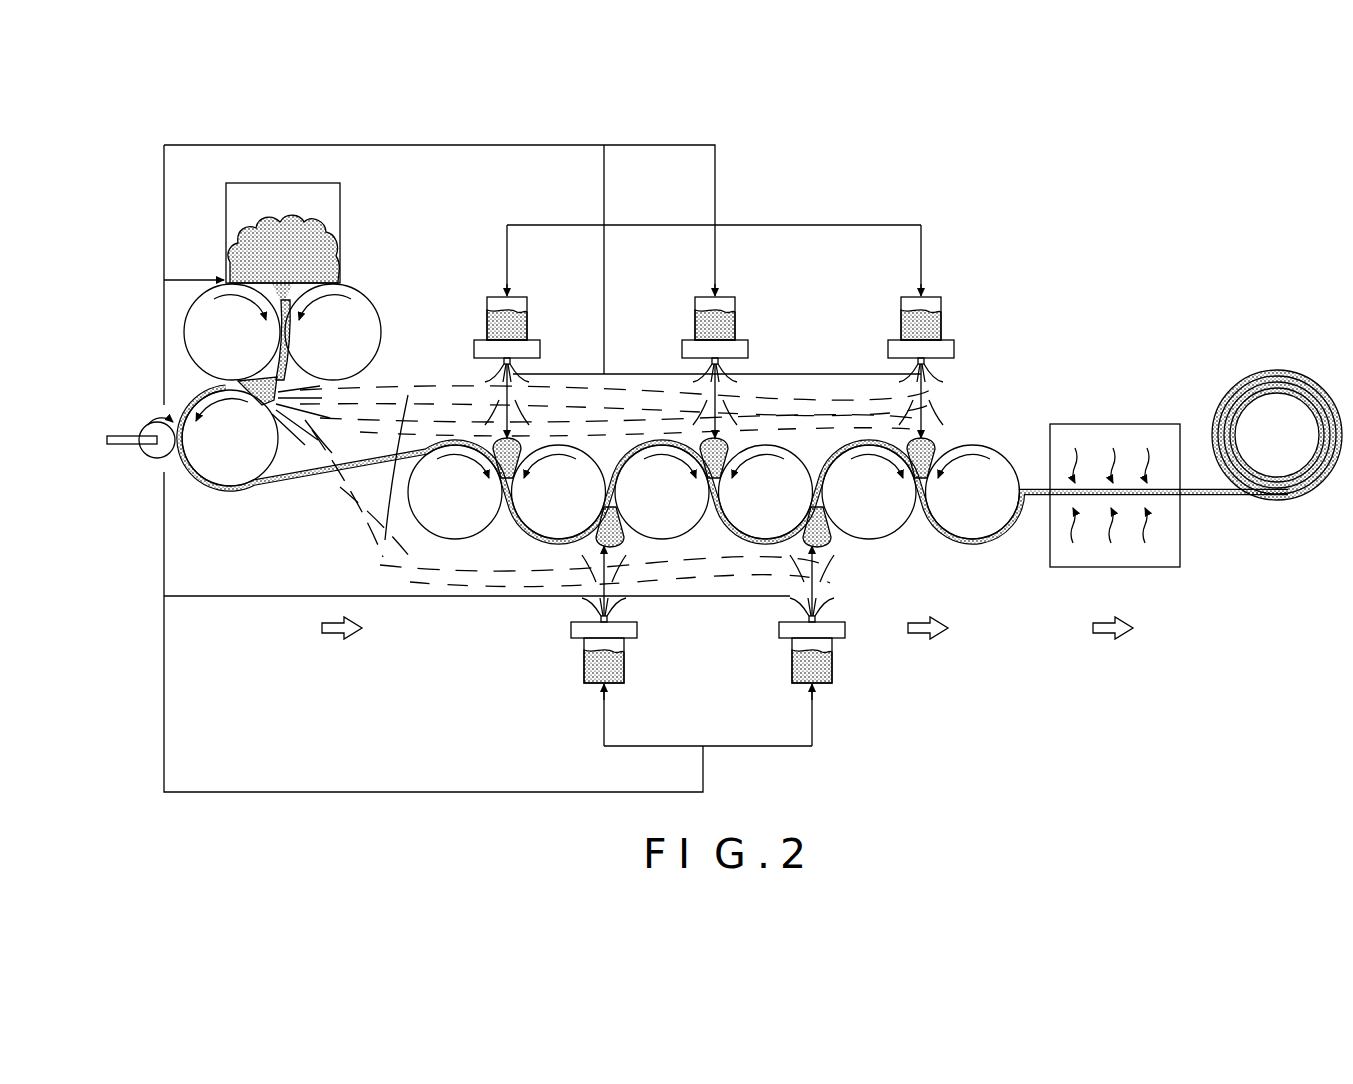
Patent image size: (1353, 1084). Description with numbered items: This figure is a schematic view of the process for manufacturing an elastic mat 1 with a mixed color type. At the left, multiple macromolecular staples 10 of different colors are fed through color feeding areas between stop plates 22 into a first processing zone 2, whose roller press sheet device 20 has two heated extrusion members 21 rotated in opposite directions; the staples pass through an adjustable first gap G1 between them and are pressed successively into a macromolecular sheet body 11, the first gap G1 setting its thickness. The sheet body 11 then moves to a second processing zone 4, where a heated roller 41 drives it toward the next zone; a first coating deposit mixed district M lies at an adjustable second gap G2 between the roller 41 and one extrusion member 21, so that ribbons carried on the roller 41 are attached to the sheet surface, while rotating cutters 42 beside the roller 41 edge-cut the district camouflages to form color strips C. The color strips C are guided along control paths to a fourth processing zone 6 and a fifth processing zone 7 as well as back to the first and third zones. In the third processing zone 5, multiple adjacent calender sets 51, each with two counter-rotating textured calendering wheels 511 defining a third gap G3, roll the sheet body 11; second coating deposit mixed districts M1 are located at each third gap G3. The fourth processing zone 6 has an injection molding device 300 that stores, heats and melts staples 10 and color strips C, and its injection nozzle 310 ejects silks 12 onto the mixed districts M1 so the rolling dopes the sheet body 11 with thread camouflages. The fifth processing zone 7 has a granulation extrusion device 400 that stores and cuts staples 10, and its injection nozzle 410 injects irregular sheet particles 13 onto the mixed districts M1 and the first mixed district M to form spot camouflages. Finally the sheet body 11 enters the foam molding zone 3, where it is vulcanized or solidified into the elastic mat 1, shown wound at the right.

The elastic mat 1 is at (1278, 368).
The first processing zone 2 is at (556, 432).
The foam molding zone 3 is at (1194, 541).
The second processing zone 4 is at (697, 486).
The third processing zone 5 is at (716, 529).
The fourth processing zone 6 is at (901, 350).
The fifth processing zone 7 is at (859, 641).
The macromolecular staples 10 is at (336, 260).
The macromolecular sheet body 11 is at (275, 490).
The silks 12 is at (915, 360).
The sheet particles 13 is at (812, 619).
The roller press sheet device 20 is at (220, 332).
The extrusion members 21 is at (333, 332).
The stop plates 22 is at (340, 191).
The roller 41 is at (217, 472).
The cutters 42 is at (122, 447).
The calender sets 51 is at (437, 559).
The calendering wheels 511 is at (437, 528).
The injection molding device 300 is at (898, 303).
The injection nozzle 310 is at (856, 395).
The granulation extrusion device 400 is at (836, 678).
The injection nozzle 410 is at (856, 584).
The color strips C is at (765, 225).
The first coating deposit mixed district M is at (245, 382).
The second coating deposit mixed districts M1 is at (942, 445).
The first gap G1 is at (283, 318).
The second gap G2 is at (250, 394).
The third gap G3 is at (503, 522).